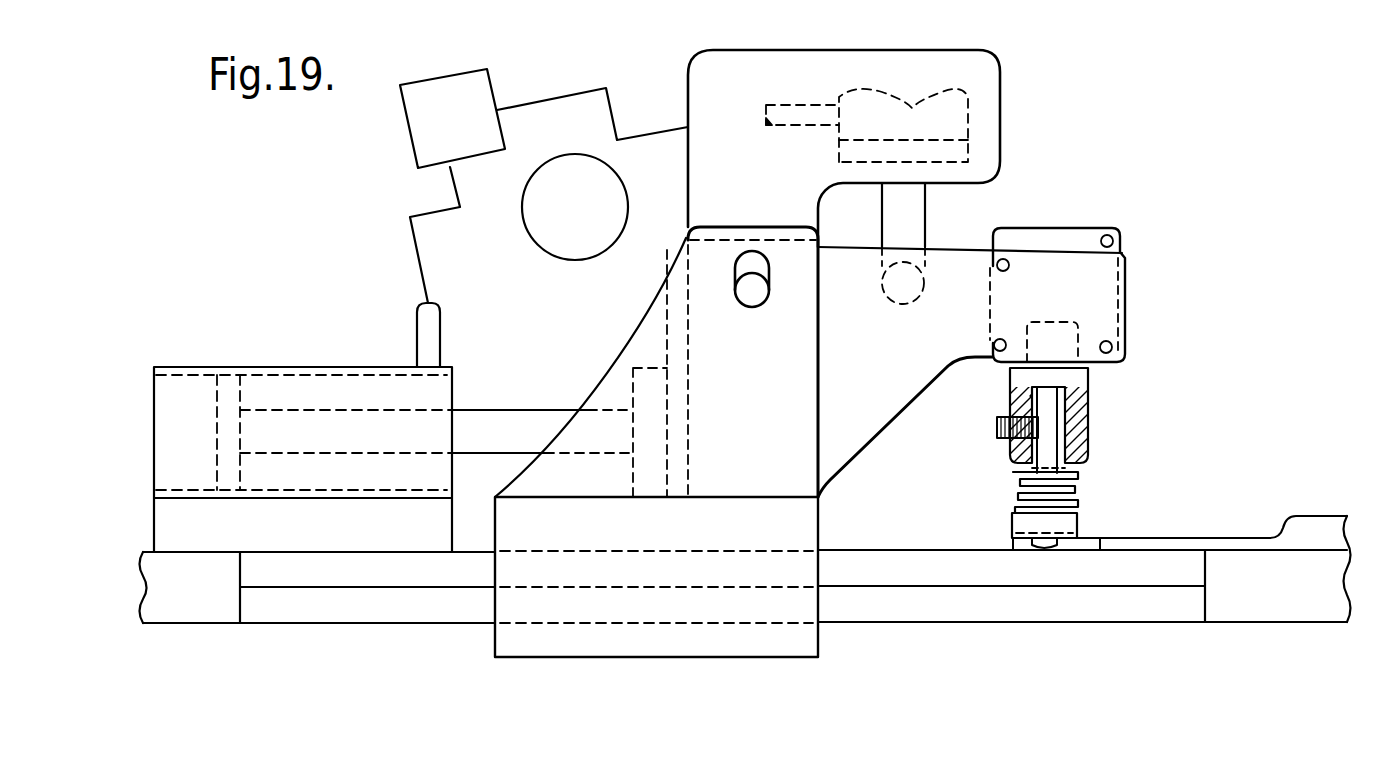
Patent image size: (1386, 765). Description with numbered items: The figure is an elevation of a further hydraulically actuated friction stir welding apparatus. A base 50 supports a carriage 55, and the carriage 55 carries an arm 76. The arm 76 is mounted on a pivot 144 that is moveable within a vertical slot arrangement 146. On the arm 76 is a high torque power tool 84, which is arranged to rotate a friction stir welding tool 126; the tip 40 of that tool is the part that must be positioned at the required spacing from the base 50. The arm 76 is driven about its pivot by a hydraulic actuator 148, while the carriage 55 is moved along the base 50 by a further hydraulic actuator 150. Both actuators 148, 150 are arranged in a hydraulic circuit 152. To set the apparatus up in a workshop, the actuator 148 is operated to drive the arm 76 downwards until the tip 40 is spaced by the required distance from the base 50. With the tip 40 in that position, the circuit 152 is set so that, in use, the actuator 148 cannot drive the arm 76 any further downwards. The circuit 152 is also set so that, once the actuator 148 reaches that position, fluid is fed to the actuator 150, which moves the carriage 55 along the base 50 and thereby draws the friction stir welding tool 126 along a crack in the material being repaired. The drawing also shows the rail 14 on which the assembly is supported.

The guide rail 14 is at (1270, 598).
The tip 40 is at (1042, 550).
The base 50 is at (397, 607).
The carriage 55 is at (619, 386).
The arm 76 is at (972, 258).
The high torque power tool 84 is at (1077, 240).
The friction stir welding tool 126 is at (1068, 526).
The pivot 144 is at (763, 298).
The vertical slot arrangement 146 is at (757, 252).
The hydraulic actuator 148 is at (912, 115).
The further hydraulic actuator 150 is at (330, 366).
The circuit 152 is at (452, 88).